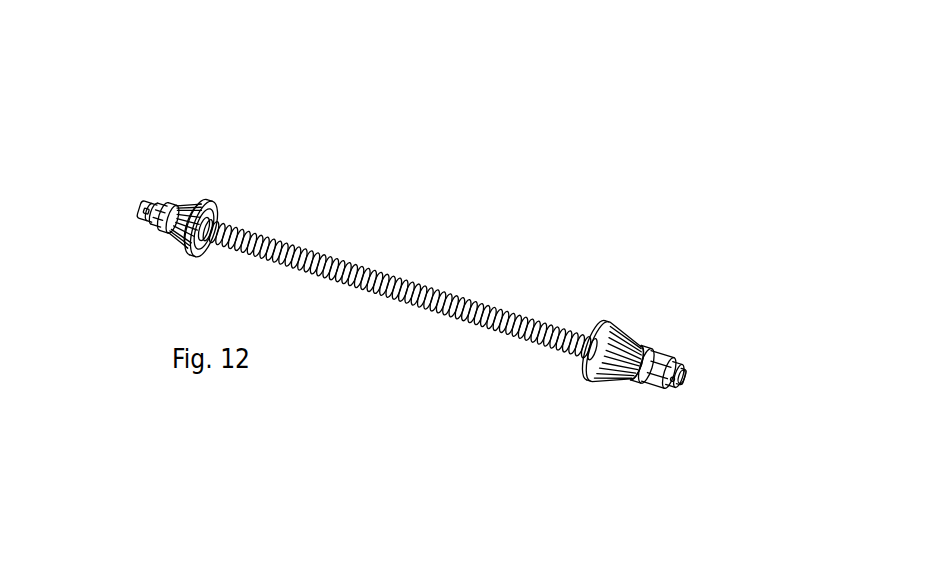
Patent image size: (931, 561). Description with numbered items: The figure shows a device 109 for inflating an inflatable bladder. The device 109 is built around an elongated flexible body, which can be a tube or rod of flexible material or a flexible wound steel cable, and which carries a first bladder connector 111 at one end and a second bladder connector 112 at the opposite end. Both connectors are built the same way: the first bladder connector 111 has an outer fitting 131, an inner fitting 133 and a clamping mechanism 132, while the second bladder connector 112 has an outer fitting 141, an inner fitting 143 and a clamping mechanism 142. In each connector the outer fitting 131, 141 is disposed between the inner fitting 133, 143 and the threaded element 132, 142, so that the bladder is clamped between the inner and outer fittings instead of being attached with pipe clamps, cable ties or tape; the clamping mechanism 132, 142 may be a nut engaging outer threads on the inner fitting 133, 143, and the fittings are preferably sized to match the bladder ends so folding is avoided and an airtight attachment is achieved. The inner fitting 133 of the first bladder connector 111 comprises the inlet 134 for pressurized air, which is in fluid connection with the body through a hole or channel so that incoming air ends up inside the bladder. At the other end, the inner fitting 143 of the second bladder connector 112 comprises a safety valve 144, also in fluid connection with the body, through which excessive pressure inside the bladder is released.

The device 109 is at (383, 253).
The first bladder connector 111 is at (213, 197).
The second bladder connector 112 is at (614, 318).
The outer fitting 131 is at (198, 203).
The clamping mechanism 132 is at (171, 203).
The inner fitting 133 is at (160, 205).
The inlet 134 is at (137, 208).
The outer fitting 141 is at (632, 338).
The clamping mechanism 142 is at (647, 355).
The inner fitting 143 is at (662, 362).
The safety valve 144 is at (675, 368).